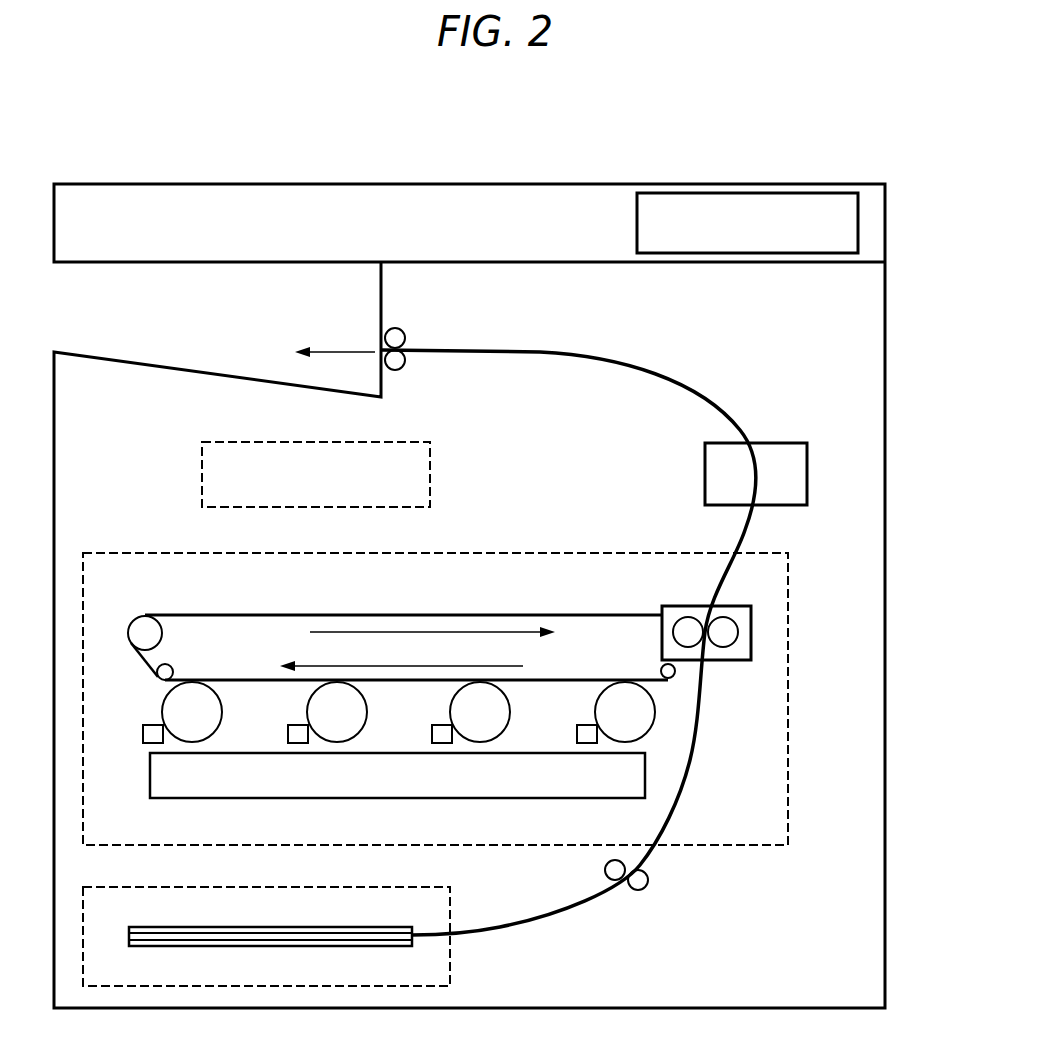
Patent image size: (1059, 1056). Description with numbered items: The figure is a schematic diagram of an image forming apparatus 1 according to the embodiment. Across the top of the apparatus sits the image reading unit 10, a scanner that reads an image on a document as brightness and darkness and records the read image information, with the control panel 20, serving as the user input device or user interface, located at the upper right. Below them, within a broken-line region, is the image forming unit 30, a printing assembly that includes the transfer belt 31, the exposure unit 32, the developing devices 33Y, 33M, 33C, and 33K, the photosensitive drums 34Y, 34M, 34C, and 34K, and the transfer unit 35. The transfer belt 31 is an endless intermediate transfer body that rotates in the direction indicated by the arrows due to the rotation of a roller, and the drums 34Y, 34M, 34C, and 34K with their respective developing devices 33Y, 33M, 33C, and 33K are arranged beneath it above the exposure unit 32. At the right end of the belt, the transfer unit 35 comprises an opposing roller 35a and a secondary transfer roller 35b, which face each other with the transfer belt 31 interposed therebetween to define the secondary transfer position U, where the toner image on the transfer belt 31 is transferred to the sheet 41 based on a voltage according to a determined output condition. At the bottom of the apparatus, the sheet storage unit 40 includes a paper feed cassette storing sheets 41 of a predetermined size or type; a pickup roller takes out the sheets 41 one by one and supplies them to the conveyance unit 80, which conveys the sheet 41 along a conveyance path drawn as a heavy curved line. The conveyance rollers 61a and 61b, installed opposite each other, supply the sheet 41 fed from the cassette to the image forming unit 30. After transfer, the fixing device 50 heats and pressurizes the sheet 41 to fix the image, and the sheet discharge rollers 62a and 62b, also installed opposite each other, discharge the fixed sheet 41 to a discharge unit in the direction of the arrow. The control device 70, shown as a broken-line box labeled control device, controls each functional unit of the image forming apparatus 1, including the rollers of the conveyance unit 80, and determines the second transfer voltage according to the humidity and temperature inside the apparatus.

The image forming apparatus 1 is at (800, 137).
The image reading unit 10 is at (572, 183).
The control panel 20 is at (818, 230).
The image forming unit 30 is at (610, 553).
The transfer belt 31 is at (396, 615).
The exposure unit 32 is at (150, 770).
The developing device 33Y is at (143, 735).
The developing device 33M is at (288, 735).
The developing device 33C is at (432, 735).
The developing device 33K is at (577, 735).
The photosensitive drum 34Y is at (187, 708).
The photosensitive drum 34M is at (330, 708).
The photosensitive drum 34C is at (478, 708).
The photosensitive drum 34K is at (620, 708).
The transfer unit 35 is at (732, 606).
The opposing roller 35a is at (692, 630).
The secondary transfer roller 35b is at (726, 645).
The secondary transfer position U is at (712, 631).
The sheet storage unit 40 is at (395, 887).
The sheet 41 is at (260, 927).
The fixing device 50 is at (785, 443).
The conveyance roller 61a is at (605, 870).
The conveyance roller 61b is at (648, 880).
The sheet discharge roller 62a is at (406, 368).
The sheet discharge roller 62b is at (404, 331).
The control device 70 is at (378, 442).
The conveyance unit 80 is at (645, 362).